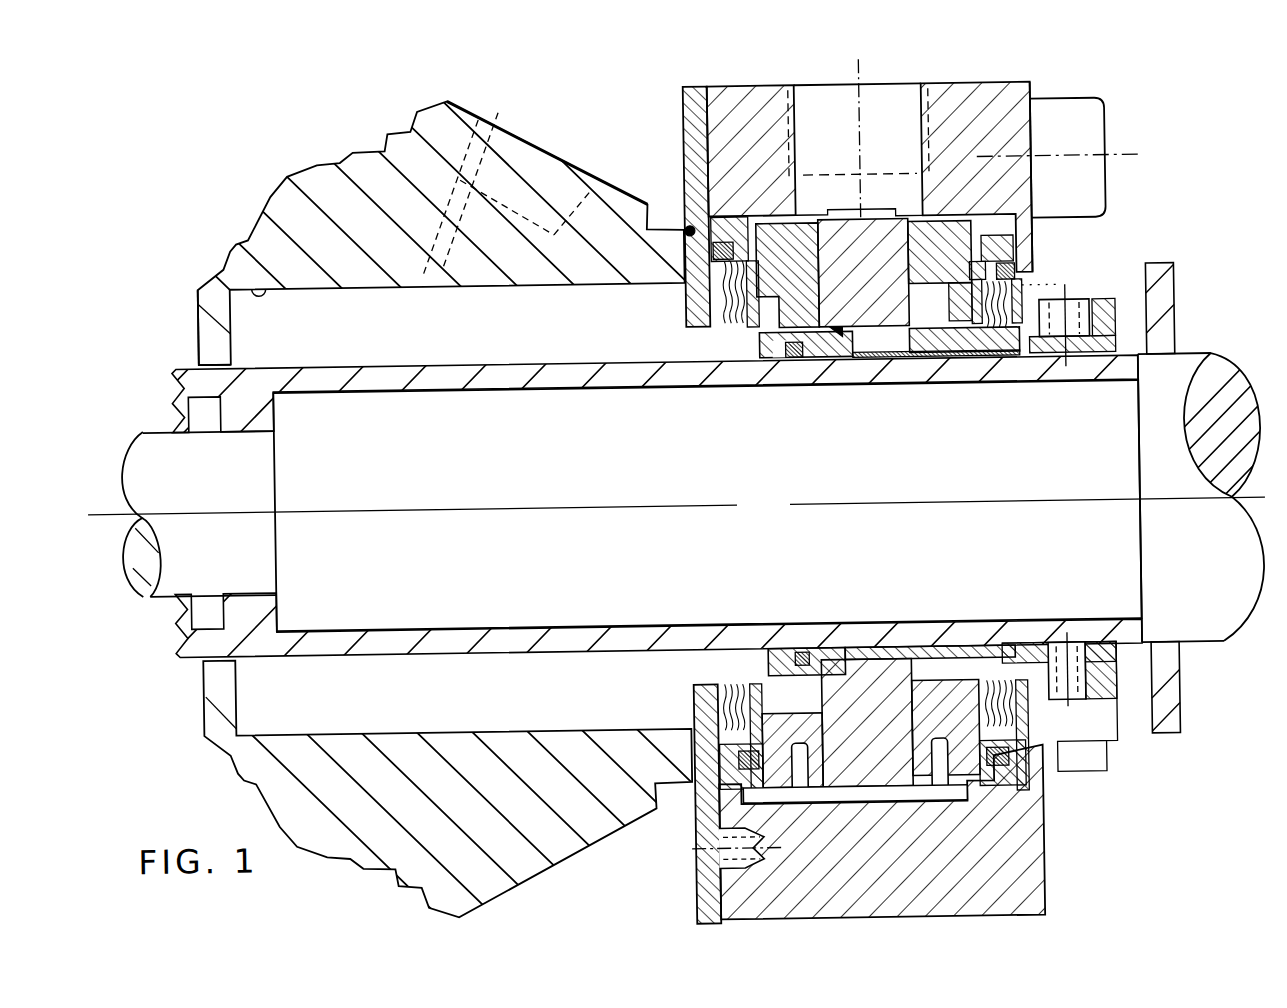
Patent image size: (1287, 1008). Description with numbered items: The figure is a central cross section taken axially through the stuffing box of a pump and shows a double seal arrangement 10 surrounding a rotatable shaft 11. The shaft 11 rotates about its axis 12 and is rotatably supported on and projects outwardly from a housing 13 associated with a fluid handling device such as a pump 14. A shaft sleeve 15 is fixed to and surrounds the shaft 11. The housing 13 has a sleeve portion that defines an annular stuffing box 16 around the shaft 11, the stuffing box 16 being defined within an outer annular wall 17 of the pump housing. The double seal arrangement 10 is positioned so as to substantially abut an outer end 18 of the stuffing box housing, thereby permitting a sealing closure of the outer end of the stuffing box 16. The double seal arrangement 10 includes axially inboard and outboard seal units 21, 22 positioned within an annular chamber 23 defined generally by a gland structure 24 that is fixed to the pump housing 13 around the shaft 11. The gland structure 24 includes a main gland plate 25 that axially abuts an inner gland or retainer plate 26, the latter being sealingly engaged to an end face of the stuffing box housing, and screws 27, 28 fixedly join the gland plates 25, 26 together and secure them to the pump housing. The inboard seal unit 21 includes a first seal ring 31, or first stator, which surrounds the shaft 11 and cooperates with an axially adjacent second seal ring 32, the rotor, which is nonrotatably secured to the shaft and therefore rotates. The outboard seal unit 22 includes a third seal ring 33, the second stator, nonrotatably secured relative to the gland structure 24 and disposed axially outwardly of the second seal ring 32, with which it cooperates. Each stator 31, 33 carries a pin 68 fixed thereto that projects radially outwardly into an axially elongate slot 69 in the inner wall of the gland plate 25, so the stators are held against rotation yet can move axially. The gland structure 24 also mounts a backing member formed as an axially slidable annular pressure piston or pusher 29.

The double seal arrangement 10 is at (1168, 215).
The shaft 11 is at (1211, 363).
The axis 12 is at (683, 505).
The housing 13 is at (287, 180).
The pump 14 is at (166, 300).
The shaft sleeve 15 is at (389, 372).
The stuffing box 16 is at (260, 687).
The outer annular wall 17 is at (250, 278).
The outer end 18 is at (689, 225).
The inboard seal unit 21 is at (826, 205).
The outboard seal unit 22 is at (895, 205).
The annular chamber 23 is at (955, 222).
The gland structure 24 is at (1042, 94).
The main gland plate 25 is at (984, 90).
The retainer plate 26 is at (689, 112).
The screw 27 is at (1101, 139).
The screw 28 is at (715, 843).
The pusher 29 is at (688, 292).
The first seal ring 31 is at (814, 357).
The second seal ring 32 is at (888, 330).
The third seal ring 33 is at (914, 339).
The pin 68 is at (808, 795).
The slot 69 is at (877, 808).